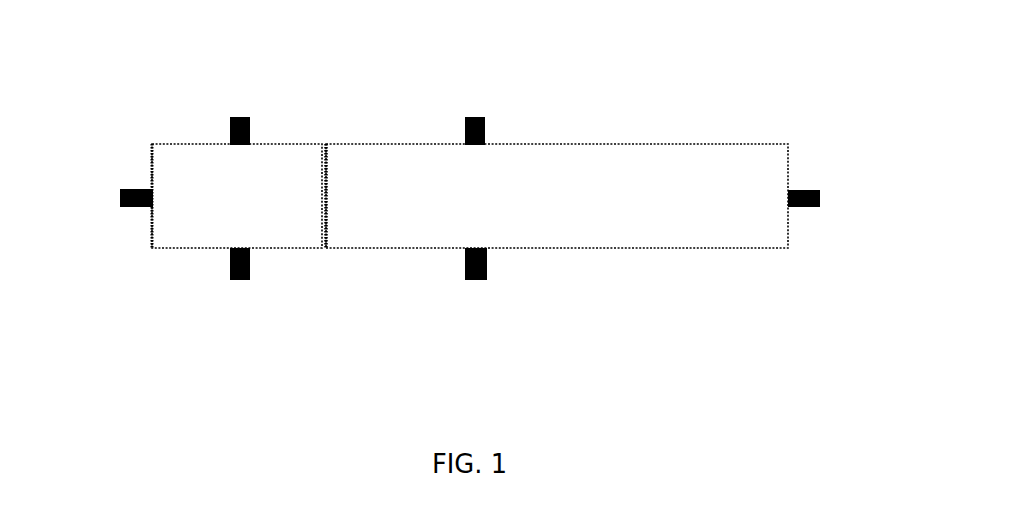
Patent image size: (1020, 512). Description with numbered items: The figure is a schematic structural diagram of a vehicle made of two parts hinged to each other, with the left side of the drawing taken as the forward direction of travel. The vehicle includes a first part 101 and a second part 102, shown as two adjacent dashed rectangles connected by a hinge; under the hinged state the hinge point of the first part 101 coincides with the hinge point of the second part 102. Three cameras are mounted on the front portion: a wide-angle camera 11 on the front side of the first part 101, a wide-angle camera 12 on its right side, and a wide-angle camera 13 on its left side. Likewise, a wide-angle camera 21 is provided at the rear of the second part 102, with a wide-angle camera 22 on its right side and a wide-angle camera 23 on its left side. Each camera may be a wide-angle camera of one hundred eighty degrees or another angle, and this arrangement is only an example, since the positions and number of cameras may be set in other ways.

The first part 101 is at (237, 196).
The second part 102 is at (557, 196).
The wide-angle camera 11 is at (133, 215).
The wide-angle camera 12 is at (247, 107).
The wide-angle camera 13 is at (248, 287).
The wide-angle camera 21 is at (810, 188).
The wide-angle camera 22 is at (475, 107).
The wide-angle camera 23 is at (477, 287).